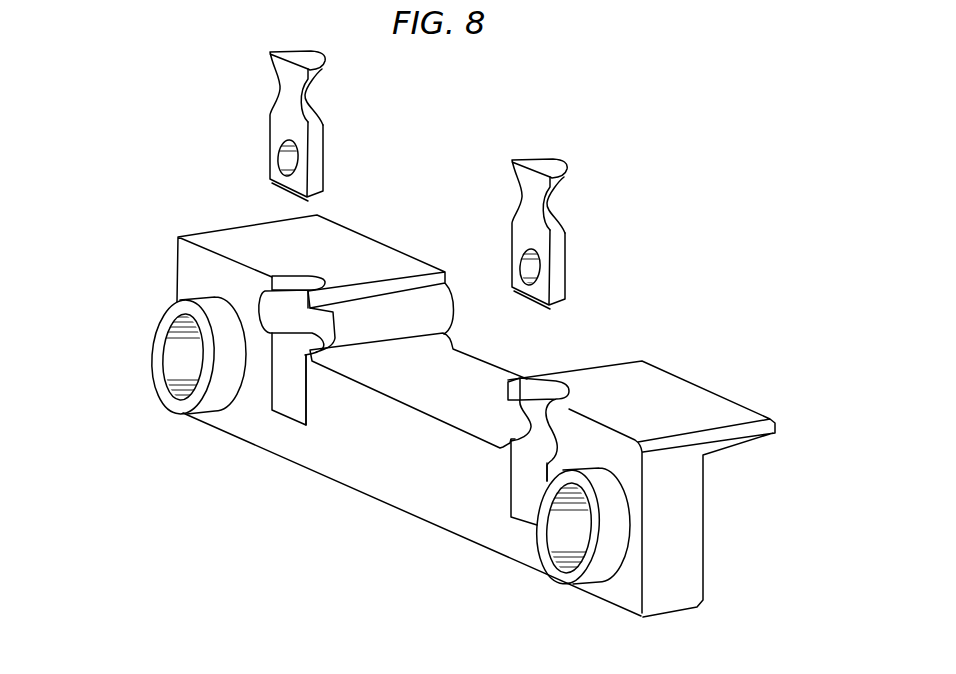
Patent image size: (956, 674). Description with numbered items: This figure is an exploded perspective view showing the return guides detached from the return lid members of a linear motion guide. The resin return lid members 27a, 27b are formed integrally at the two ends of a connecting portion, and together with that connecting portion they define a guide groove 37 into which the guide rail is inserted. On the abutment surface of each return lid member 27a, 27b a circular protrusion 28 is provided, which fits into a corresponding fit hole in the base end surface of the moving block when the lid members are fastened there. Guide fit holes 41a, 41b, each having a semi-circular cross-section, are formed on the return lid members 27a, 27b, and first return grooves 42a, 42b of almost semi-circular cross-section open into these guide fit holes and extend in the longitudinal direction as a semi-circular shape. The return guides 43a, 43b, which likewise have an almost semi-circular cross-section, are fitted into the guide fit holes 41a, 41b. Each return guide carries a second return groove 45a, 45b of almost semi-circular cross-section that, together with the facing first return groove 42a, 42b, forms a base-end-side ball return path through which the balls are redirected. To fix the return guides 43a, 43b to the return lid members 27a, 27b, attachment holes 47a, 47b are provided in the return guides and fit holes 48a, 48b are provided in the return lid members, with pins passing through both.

The return lid member 27a is at (685, 397).
The return lid member 27b is at (220, 240).
The circular protrusion 28 is at (156, 370).
The guide groove 37 is at (478, 393).
The guide fit hole 41a is at (522, 490).
The guide fit hole 41b is at (285, 382).
The first return groove 42a is at (537, 417).
The first return groove 42b is at (287, 317).
The return guide 43a is at (552, 234).
The return guide 43b is at (312, 126).
The second return groove 45a is at (546, 208).
The second return groove 45b is at (306, 100).
The attachment hole 47a is at (530, 270).
The attachment hole 47b is at (287, 155).
The fit hole 48a is at (535, 483).
The fit hole 48b is at (299, 380).